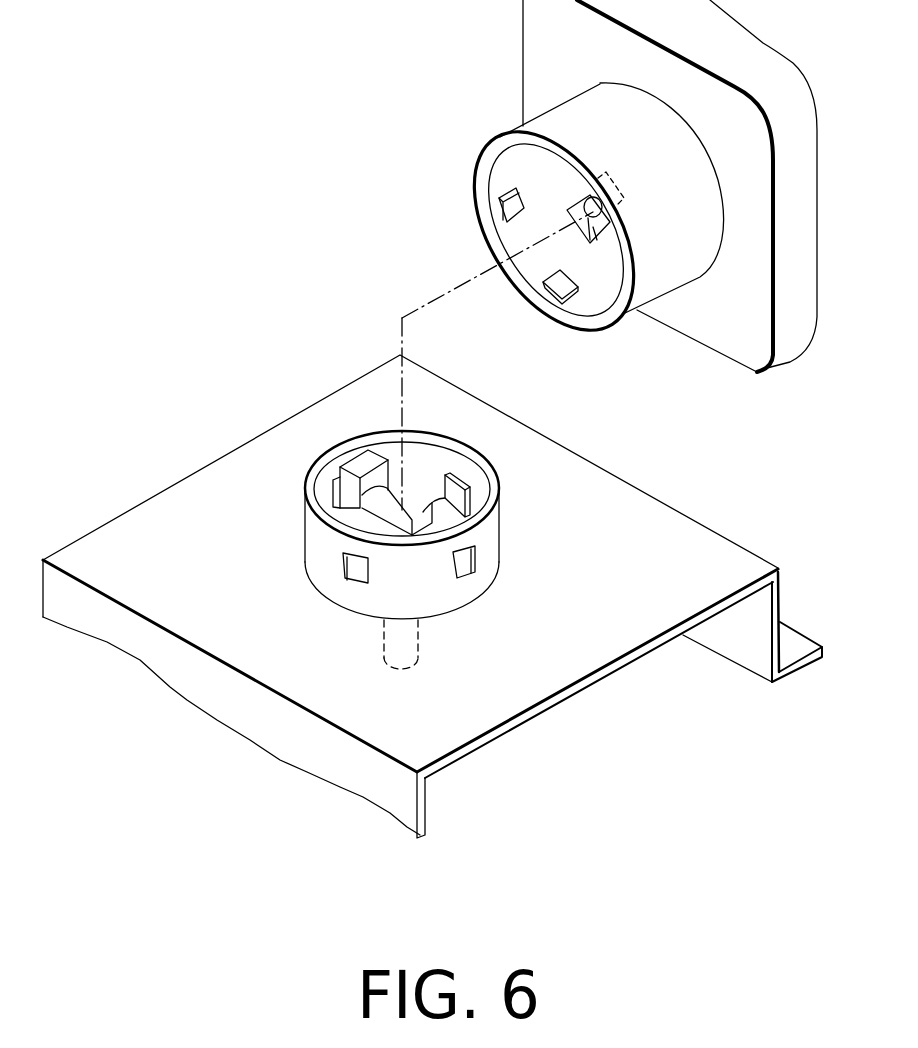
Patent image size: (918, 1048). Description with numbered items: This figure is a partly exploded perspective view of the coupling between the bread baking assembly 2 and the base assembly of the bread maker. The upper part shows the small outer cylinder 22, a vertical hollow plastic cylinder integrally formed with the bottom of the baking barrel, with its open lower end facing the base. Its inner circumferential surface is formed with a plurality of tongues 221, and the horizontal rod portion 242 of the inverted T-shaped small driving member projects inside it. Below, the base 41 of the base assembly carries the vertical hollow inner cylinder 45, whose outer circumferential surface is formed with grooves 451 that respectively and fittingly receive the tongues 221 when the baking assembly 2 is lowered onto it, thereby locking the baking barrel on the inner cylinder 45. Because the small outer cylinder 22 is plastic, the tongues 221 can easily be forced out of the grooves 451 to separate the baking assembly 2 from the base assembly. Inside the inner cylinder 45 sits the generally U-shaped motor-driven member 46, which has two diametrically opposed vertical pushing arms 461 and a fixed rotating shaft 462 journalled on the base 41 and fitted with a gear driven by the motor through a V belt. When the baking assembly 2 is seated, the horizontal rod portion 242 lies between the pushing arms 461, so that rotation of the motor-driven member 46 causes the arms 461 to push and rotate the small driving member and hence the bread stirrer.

The baking assembly 2 is at (754, 386).
The small outer cylinder 22 is at (566, 322).
The tongues 221 is at (507, 203).
The horizontal rod portion 242 is at (590, 244).
The base 41 is at (802, 664).
The inner cylinder 45 is at (497, 540).
The grooves 451 is at (467, 575).
The motor-driven member 46 is at (307, 492).
The pushing arms 461 is at (358, 460).
The fixed rotating shaft 462 is at (428, 665).